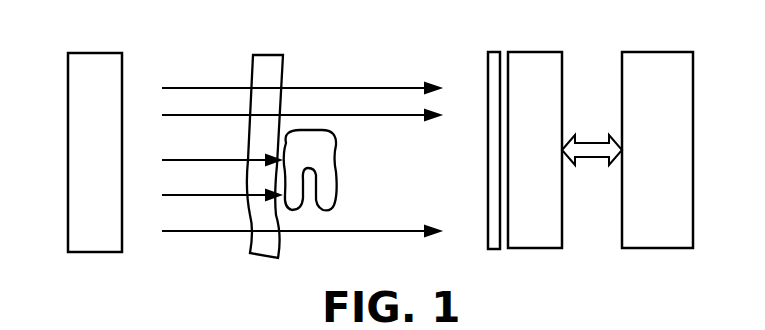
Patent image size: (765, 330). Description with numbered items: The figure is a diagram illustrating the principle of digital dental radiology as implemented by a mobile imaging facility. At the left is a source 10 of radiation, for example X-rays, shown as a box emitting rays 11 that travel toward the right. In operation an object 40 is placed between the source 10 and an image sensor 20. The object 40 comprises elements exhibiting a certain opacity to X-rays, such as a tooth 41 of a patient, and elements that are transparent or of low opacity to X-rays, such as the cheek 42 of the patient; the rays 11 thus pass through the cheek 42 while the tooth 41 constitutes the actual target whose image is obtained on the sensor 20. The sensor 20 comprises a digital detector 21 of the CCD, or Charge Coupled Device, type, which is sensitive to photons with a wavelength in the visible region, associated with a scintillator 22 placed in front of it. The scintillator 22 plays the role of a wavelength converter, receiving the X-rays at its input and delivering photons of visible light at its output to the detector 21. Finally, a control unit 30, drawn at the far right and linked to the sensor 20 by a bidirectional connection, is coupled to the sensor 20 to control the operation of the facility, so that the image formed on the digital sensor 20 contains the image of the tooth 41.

The source 10 is at (95, 252).
The X-ray beams 11 is at (178, 160).
The image sensor 20 is at (568, 50).
The digital detector 21 is at (548, 248).
The scintillator 22 is at (492, 249).
The control unit 30 is at (660, 248).
The object 40 is at (328, 50).
The tooth 41 is at (322, 196).
The cheek 42 is at (258, 253).